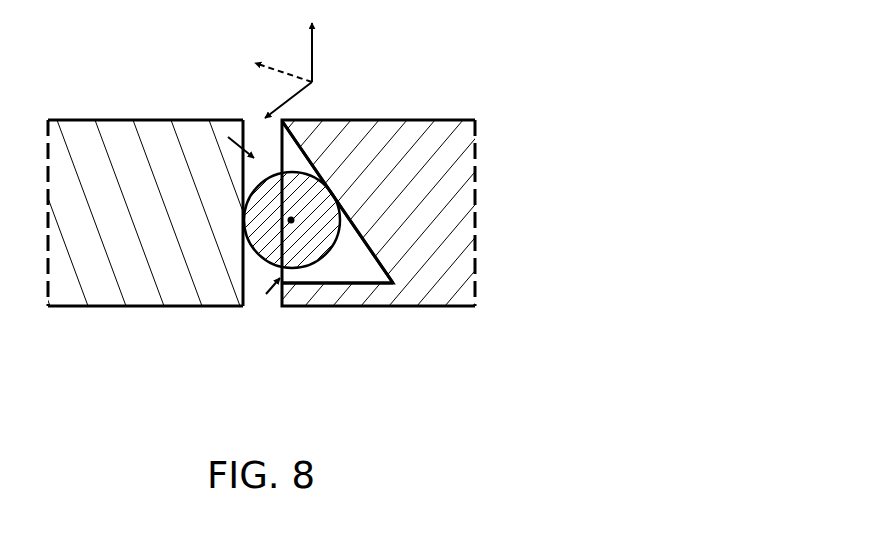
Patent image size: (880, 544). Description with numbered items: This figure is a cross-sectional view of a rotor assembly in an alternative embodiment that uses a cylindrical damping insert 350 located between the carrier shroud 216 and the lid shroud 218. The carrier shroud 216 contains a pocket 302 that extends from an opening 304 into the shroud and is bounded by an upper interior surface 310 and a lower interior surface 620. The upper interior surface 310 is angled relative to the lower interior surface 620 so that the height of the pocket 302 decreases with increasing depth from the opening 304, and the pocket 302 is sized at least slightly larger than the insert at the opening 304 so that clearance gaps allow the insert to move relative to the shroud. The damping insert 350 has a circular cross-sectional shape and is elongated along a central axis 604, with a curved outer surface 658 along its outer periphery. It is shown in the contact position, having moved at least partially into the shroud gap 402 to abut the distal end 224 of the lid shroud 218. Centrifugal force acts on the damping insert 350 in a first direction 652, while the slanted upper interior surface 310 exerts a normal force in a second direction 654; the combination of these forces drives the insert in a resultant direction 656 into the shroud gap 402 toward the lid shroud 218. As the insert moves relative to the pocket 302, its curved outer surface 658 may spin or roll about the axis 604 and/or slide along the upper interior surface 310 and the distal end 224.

The carrier shroud 216 is at (443, 135).
The lid shroud 218 is at (115, 135).
The distal end of the lid shroud 224 is at (255, 263).
The pocket 302 is at (367, 270).
The opening 304 is at (268, 261).
The upper interior surface 310 is at (385, 263).
The cylindrical damping insert 350 is at (292, 284).
The shroud gap 402 is at (228, 137).
The central axis 604 is at (266, 294).
The lower interior surface 620 is at (347, 283).
The first direction 652 is at (313, 47).
The second direction 654 is at (285, 100).
The resultant direction 656 is at (283, 72).
The curved outer surface 658 is at (323, 255).